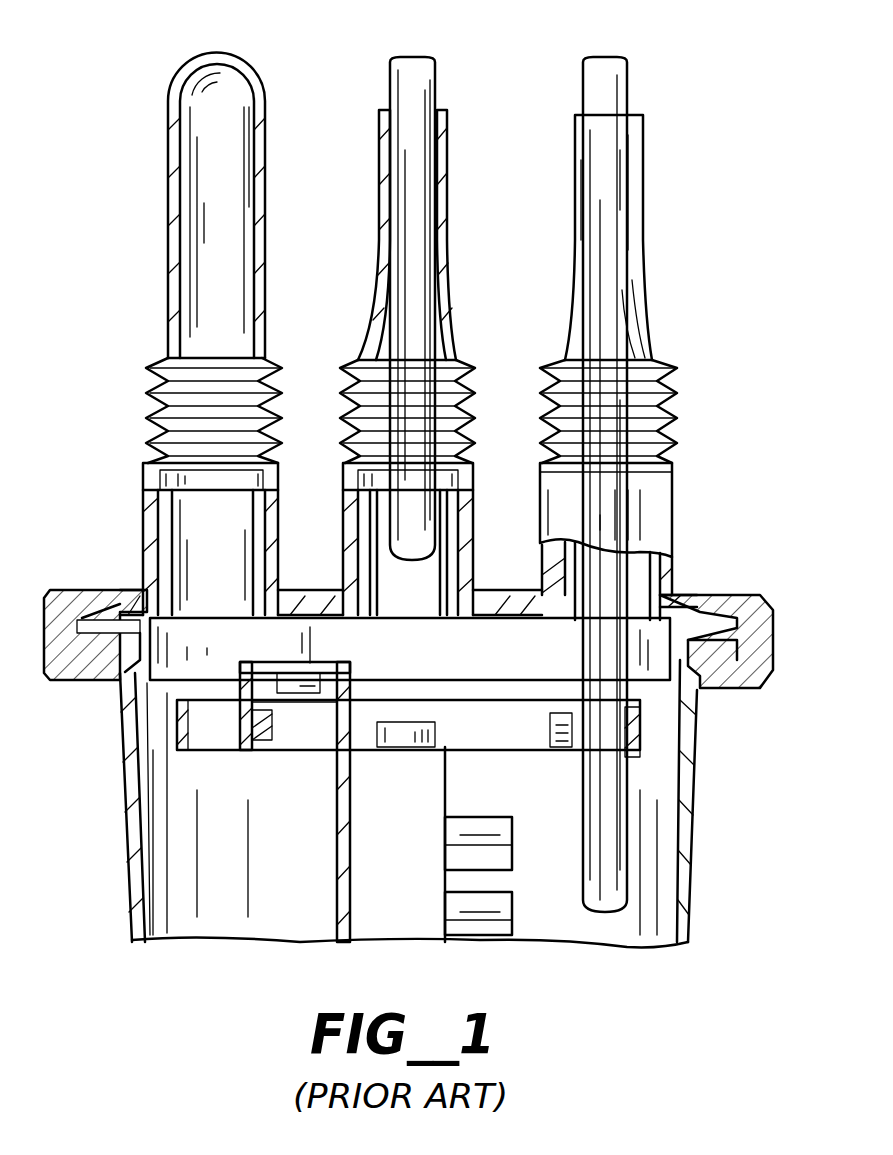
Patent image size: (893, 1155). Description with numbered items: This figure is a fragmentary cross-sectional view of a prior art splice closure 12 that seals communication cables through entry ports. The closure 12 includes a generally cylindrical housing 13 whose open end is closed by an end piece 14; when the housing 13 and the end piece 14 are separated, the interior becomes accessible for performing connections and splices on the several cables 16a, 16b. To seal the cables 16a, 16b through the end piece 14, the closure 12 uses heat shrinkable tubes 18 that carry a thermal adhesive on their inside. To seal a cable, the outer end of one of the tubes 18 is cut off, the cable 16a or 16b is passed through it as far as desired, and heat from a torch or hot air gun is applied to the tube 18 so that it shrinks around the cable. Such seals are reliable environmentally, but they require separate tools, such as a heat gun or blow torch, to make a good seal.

The splice closure 12 is at (748, 420).
The housing 13 is at (692, 792).
The end piece 14 is at (197, 652).
The cable 16a is at (405, 88).
The cable 16b is at (605, 90).
The heat shrinkable tube 18 is at (166, 320).